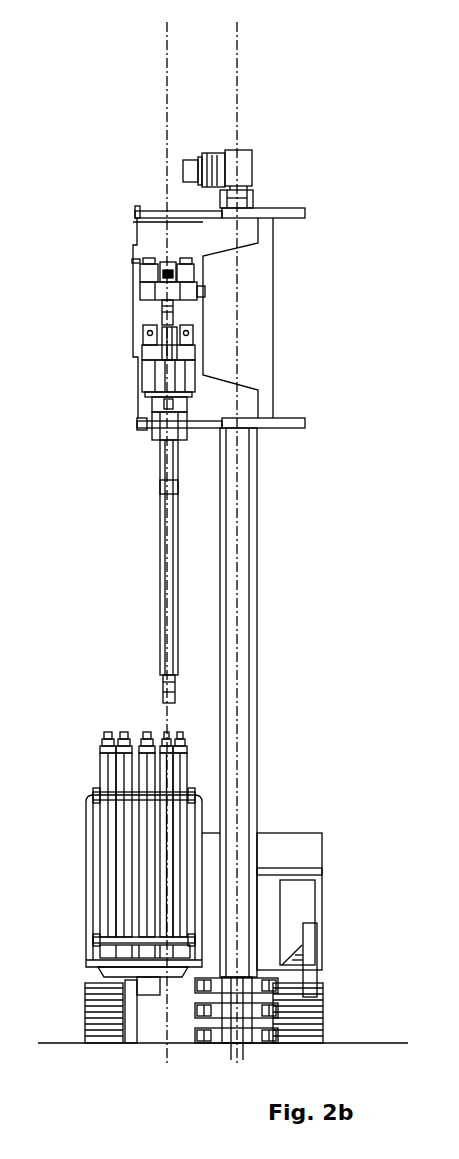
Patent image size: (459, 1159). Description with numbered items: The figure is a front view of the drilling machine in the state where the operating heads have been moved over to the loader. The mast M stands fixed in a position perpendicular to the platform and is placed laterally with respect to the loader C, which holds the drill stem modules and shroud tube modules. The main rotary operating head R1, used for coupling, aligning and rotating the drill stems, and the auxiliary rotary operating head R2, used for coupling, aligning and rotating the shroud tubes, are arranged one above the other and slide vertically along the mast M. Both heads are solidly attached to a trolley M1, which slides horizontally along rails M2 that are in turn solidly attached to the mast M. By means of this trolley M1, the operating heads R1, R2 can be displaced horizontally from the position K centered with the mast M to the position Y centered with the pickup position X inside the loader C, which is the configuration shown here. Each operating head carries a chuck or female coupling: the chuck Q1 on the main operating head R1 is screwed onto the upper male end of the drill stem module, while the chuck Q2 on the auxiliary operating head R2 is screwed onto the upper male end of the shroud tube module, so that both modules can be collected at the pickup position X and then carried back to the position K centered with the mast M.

The position centered with the collection position Y is at (167, 38).
The position centered with the mast K is at (237, 38).
The trolley M1 is at (147, 238).
The rails M2 is at (290, 213).
The main rotary operating head R1 is at (147, 292).
The chuck of the main operating head Q1 is at (152, 313).
The auxiliary rotary operating head R2 is at (147, 378).
The chuck of the auxiliary operating head Q2 is at (150, 484).
The pickup position X is at (168, 723).
The loader C is at (78, 815).
The mast M is at (243, 744).